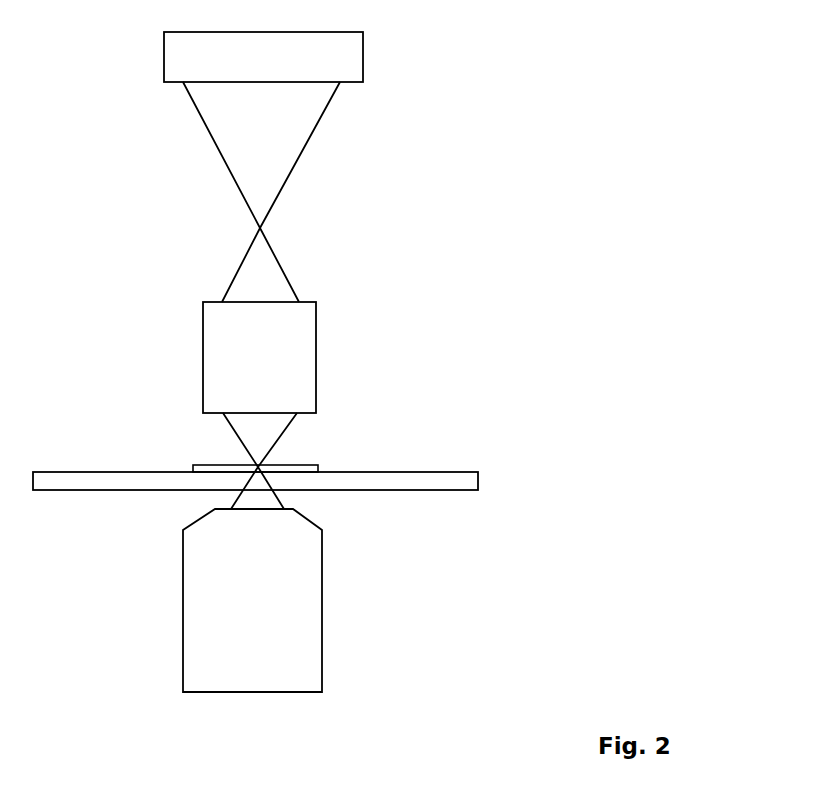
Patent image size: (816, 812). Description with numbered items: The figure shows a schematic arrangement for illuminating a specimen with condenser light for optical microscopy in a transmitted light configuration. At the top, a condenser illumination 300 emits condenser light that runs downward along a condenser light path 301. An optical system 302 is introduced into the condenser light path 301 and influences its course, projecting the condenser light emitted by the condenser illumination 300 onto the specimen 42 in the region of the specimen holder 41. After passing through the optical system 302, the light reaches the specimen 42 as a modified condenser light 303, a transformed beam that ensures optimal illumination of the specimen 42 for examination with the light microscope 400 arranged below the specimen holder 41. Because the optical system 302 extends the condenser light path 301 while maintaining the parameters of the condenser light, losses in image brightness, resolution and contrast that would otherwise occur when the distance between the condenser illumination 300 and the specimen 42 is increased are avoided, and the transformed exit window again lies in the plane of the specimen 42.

The condenser illumination 300 is at (338, 57).
The condenser light path 301 is at (295, 153).
The optical system 302 is at (298, 333).
The modified condenser light 303 is at (247, 437).
The specimen 42 is at (293, 463).
The specimen holder 41 is at (467, 478).
The light microscope 400 is at (298, 622).